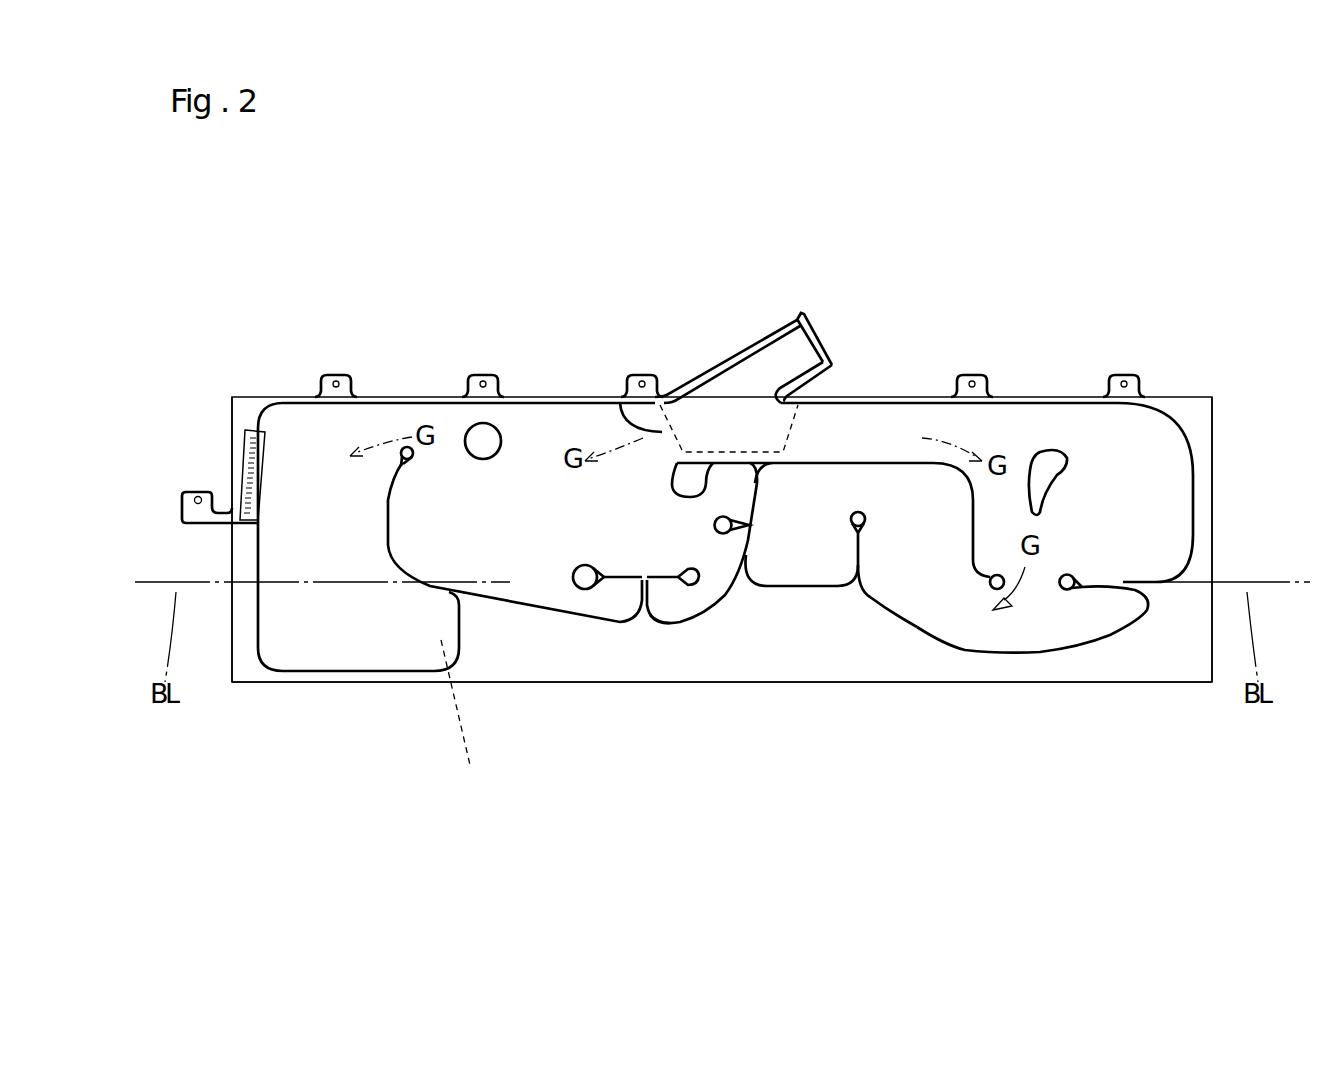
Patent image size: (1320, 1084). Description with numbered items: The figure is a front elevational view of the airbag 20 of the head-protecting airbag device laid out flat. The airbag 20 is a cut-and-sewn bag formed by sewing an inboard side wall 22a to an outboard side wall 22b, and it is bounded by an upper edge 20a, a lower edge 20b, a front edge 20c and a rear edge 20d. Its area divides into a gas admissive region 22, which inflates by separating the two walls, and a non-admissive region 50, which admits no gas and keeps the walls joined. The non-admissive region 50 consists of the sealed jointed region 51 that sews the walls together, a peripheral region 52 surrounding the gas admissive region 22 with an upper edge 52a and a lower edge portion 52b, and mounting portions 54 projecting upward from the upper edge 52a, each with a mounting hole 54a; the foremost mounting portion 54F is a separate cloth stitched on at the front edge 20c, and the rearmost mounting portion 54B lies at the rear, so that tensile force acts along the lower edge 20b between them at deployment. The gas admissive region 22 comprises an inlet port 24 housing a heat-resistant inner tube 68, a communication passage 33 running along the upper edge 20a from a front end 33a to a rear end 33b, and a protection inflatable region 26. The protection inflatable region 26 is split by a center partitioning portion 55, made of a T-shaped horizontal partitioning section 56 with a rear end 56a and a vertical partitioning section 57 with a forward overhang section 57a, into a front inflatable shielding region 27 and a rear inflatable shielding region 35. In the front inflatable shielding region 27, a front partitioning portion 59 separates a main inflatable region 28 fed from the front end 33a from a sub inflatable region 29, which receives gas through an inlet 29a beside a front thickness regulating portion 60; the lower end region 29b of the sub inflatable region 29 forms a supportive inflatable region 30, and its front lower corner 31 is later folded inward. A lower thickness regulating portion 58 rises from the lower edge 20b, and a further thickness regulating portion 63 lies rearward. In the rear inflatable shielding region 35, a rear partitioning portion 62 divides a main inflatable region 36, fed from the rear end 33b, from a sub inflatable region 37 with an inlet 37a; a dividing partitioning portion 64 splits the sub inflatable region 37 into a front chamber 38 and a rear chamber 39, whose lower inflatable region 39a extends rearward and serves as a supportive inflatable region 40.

The airbag 20 is at (303, 268).
The upper edge 20a is at (578, 396).
The lower edge 20b is at (540, 682).
The front edge 20c is at (240, 550).
The rear edge 20d is at (1213, 540).
The gas admissive region 22 is at (497, 817).
The inboard side wall 22a is at (413, 645).
The outboard side wall 22b is at (465, 730).
The inlet port 24 is at (782, 353).
The protection inflatable region 26 is at (865, 782).
The front inflatable shielding region 27 is at (698, 628).
The main inflatable region 28 is at (547, 490).
The sub inflatable region 29 is at (305, 450).
The inlet 29a is at (407, 446).
The lower end region 29b is at (348, 662).
The supportive inflatable region 30 is at (312, 636).
The front lower corner 31 is at (273, 650).
The communication passage 33 is at (870, 418).
The front end 33a is at (618, 408).
The rear end 33b is at (967, 432).
The rear inflatable shielding region 35 is at (889, 626).
The main inflatable region 36 is at (1137, 447).
The sub inflatable region 37 is at (990, 757).
The inlet 37a is at (1035, 582).
The front chamber 38 is at (898, 615).
The rear chamber 39 is at (947, 552).
The inflatable region 39a is at (1040, 627).
The supportive inflatable region 40 is at (1040, 627).
The non-admissive region 50 is at (368, 395).
The jointed region 51 is at (272, 410).
The peripheral region 52 is at (467, 392).
The upper edge 52a is at (1050, 400).
The lower edge 52b is at (625, 665).
The mounting portion 54 is at (987, 375).
The mounting hole 54a is at (970, 380).
The rearmost mounting portion 54B is at (1128, 375).
The foremost mounting portion 54F is at (183, 492).
The center partitioning portion 55 is at (821, 450).
The horizontal partitioning section 56 is at (901, 460).
The rear end 56a is at (997, 573).
The vertical partitioning section 57 is at (757, 500).
The front overhang section 57a is at (715, 523).
The lower thickness regulating portion 58 is at (623, 575).
The front partitioning portion 59 is at (388, 522).
The front thickness regulating portion 60 is at (483, 459).
The rear partitioning portion 62 is at (1100, 587).
The thickness regulating portion 63 is at (1053, 485).
The dividing partitioning portion 64 is at (860, 550).
The inner tube 68 is at (727, 395).